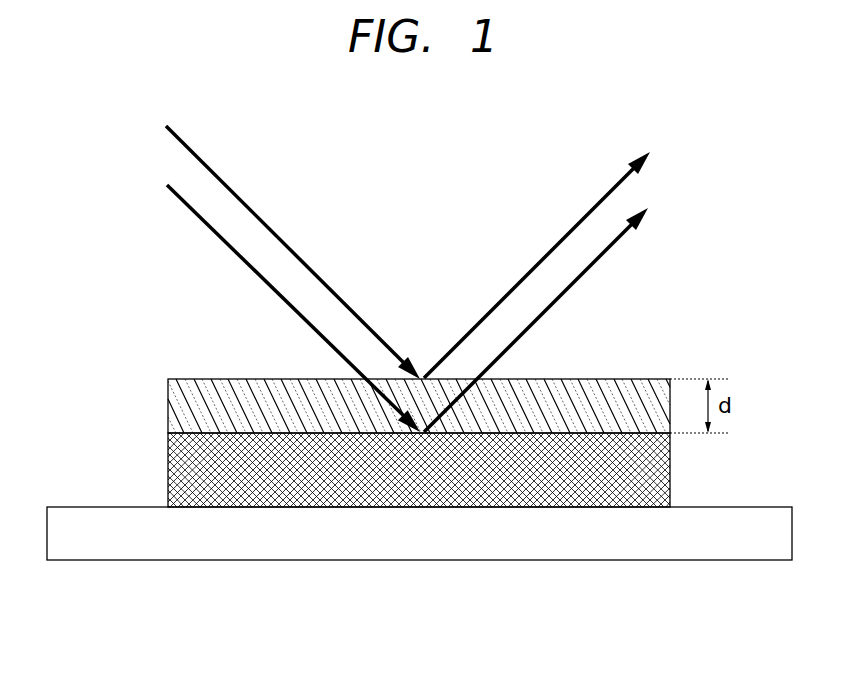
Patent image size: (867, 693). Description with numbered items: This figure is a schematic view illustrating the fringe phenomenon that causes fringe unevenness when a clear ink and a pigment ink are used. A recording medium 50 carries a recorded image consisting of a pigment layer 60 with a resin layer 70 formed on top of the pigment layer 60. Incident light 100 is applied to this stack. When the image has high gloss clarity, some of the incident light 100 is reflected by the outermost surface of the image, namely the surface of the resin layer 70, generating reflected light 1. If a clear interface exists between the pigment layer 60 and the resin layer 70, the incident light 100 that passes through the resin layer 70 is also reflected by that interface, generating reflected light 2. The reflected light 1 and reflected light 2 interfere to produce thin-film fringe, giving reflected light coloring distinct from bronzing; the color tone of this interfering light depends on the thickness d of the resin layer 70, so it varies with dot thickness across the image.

The incident light 100 is at (192, 208).
The reflected light 1 is at (576, 218).
The reflected light 2 is at (583, 280).
The resin layer 70 is at (168, 398).
The pigment layer 60 is at (168, 455).
The recording medium 50 is at (104, 545).